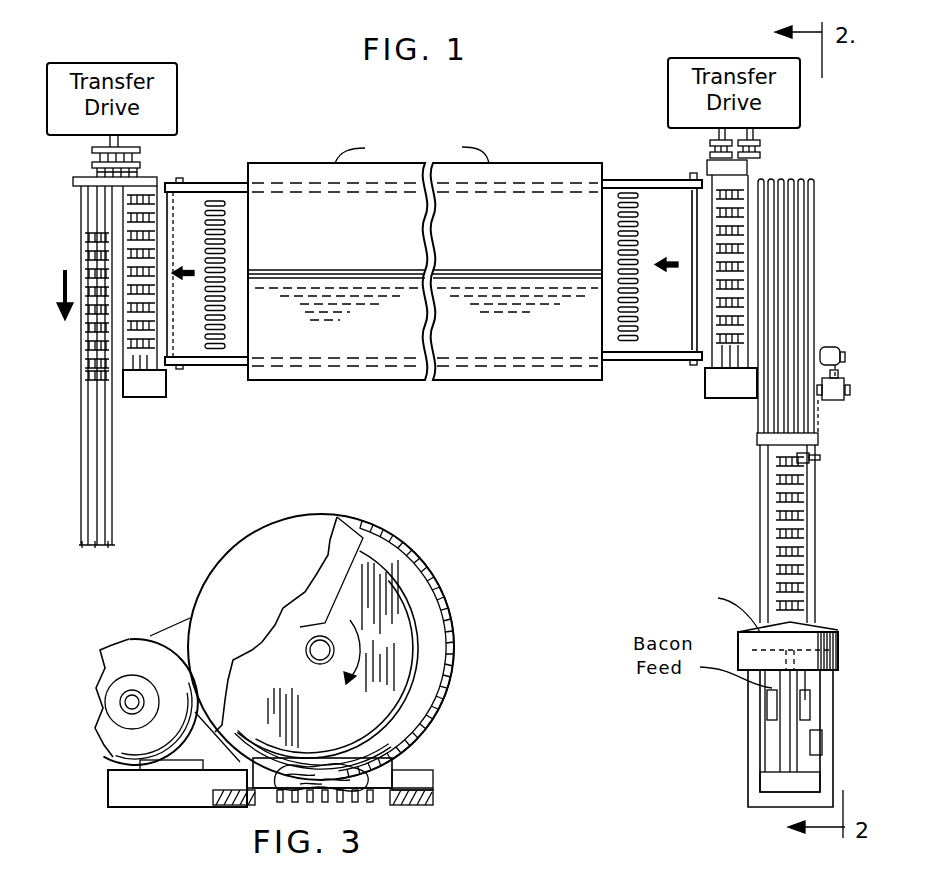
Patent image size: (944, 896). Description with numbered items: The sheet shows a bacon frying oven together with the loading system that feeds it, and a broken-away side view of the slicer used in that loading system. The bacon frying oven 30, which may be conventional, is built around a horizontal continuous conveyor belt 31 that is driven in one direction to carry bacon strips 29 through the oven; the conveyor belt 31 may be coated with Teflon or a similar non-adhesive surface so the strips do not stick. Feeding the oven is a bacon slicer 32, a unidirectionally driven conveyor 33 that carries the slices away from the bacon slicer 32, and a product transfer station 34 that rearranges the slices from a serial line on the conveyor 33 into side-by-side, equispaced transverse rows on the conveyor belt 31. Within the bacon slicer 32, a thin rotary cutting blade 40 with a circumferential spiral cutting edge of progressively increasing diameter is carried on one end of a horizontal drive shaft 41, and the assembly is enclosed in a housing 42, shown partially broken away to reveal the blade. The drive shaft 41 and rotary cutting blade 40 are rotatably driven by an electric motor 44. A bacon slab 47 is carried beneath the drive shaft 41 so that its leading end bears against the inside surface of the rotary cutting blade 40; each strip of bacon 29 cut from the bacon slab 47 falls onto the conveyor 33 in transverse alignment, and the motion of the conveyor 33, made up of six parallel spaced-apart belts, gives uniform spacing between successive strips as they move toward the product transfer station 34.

In FIG. 1, the bacon strips 29 is at (640, 213).
In FIG. 1, the bacon frying oven 30 is at (372, 386).
In FIG. 1, the conveyor belt 31 is at (240, 345).
In FIG. 1, the bacon slicer 32 is at (753, 630).
In FIG. 3, the bacon slicer 32 is at (412, 538).
In FIG. 1, the conveyor 33 is at (780, 545).
In FIG. 3, the conveyor 33 is at (375, 808).
In FIG. 1, the product transfer station 34 is at (725, 402).
In FIG. 3, the rotary cutting blade 40 is at (378, 693).
In FIG. 3, the drive shaft 41 is at (318, 650).
In FIG. 3, the housing 42 is at (244, 558).
In FIG. 3, the electric motor 44 is at (123, 645).
In FIG. 3, the bacon slab 47 is at (383, 738).